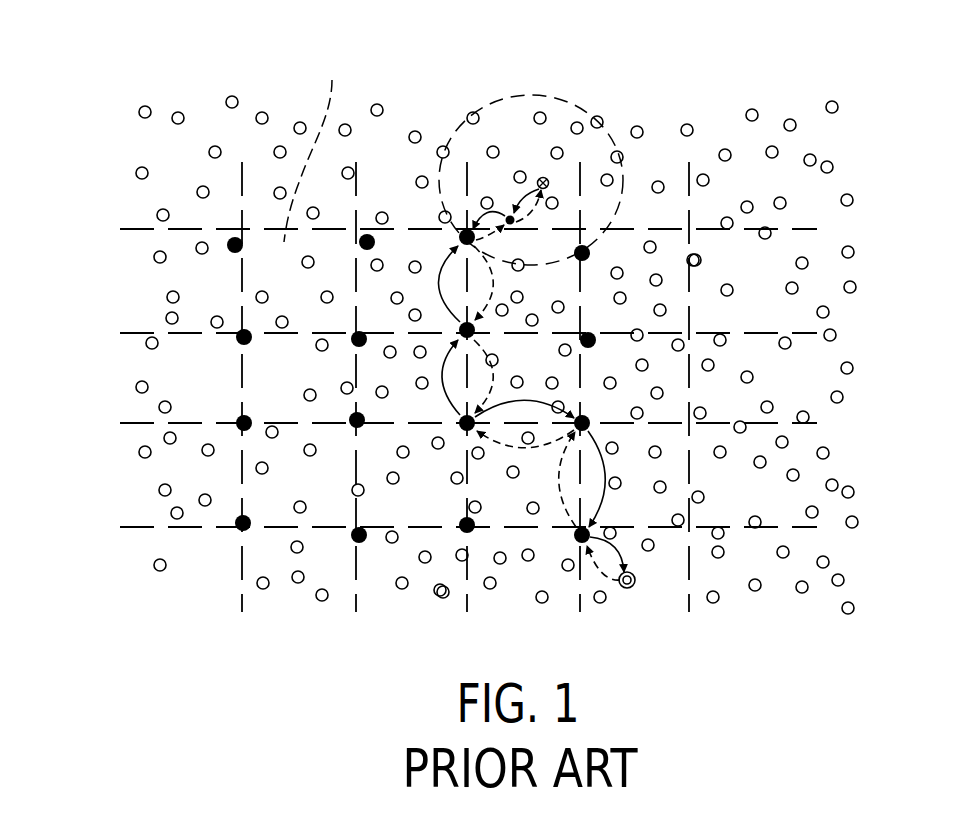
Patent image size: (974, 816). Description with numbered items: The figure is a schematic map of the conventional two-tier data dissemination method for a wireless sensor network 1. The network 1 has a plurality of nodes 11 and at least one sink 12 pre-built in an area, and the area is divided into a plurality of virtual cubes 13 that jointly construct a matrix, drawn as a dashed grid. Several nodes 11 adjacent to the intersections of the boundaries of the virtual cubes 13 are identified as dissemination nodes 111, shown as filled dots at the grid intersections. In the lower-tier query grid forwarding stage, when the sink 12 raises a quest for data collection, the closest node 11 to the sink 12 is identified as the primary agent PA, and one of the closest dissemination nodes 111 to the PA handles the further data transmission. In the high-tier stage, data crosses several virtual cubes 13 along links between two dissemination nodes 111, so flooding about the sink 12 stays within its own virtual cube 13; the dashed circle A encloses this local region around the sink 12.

The wireless sensor network 1 is at (860, 148).
The node 11 is at (213, 146).
The dissemination node 111 is at (469, 229).
The sink 12 is at (544, 177).
The virtual cube 13 is at (318, 144).
The search region A is at (528, 97).
The primary agent PA is at (505, 203).